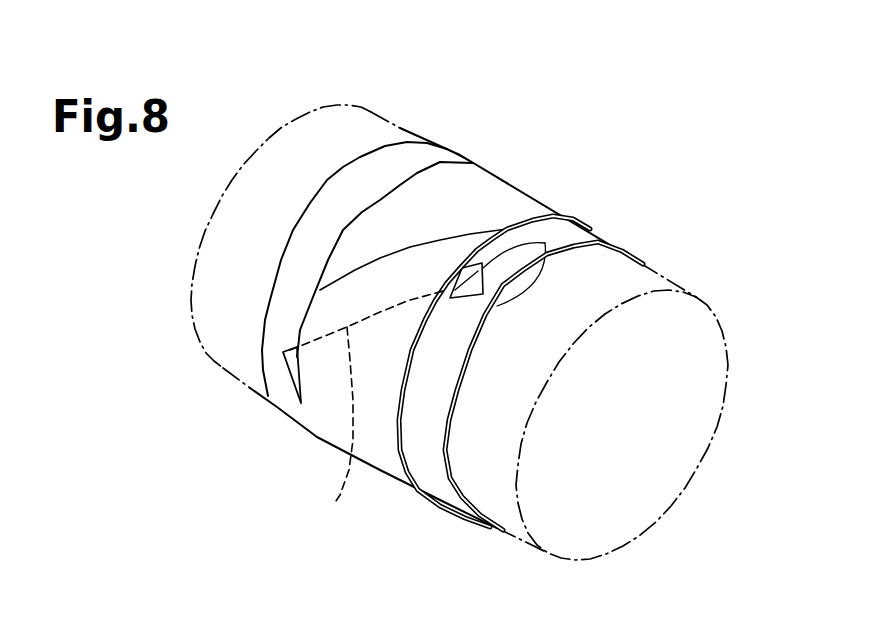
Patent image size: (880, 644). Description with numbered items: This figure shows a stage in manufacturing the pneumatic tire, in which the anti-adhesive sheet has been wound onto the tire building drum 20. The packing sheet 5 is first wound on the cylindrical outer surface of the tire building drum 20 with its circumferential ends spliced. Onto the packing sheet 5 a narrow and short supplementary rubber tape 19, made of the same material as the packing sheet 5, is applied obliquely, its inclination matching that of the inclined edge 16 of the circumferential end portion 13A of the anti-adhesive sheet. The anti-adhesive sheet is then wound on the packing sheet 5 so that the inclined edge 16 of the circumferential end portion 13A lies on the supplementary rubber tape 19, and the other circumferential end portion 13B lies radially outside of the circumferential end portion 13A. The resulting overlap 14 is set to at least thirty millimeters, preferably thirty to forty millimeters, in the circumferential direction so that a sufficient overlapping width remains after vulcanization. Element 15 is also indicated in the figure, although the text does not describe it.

The packing sheet 5 is at (494, 419).
The circumferential end portion 13A is at (414, 280).
The other circumferential end portion 13B is at (451, 216).
The overlap 14 is at (228, 382).
The gap 15 is at (471, 94).
The inclined edge 16 is at (357, 289).
The supplementary rubber tape 19 is at (544, 292).
The tire building drum 20 is at (469, 332).